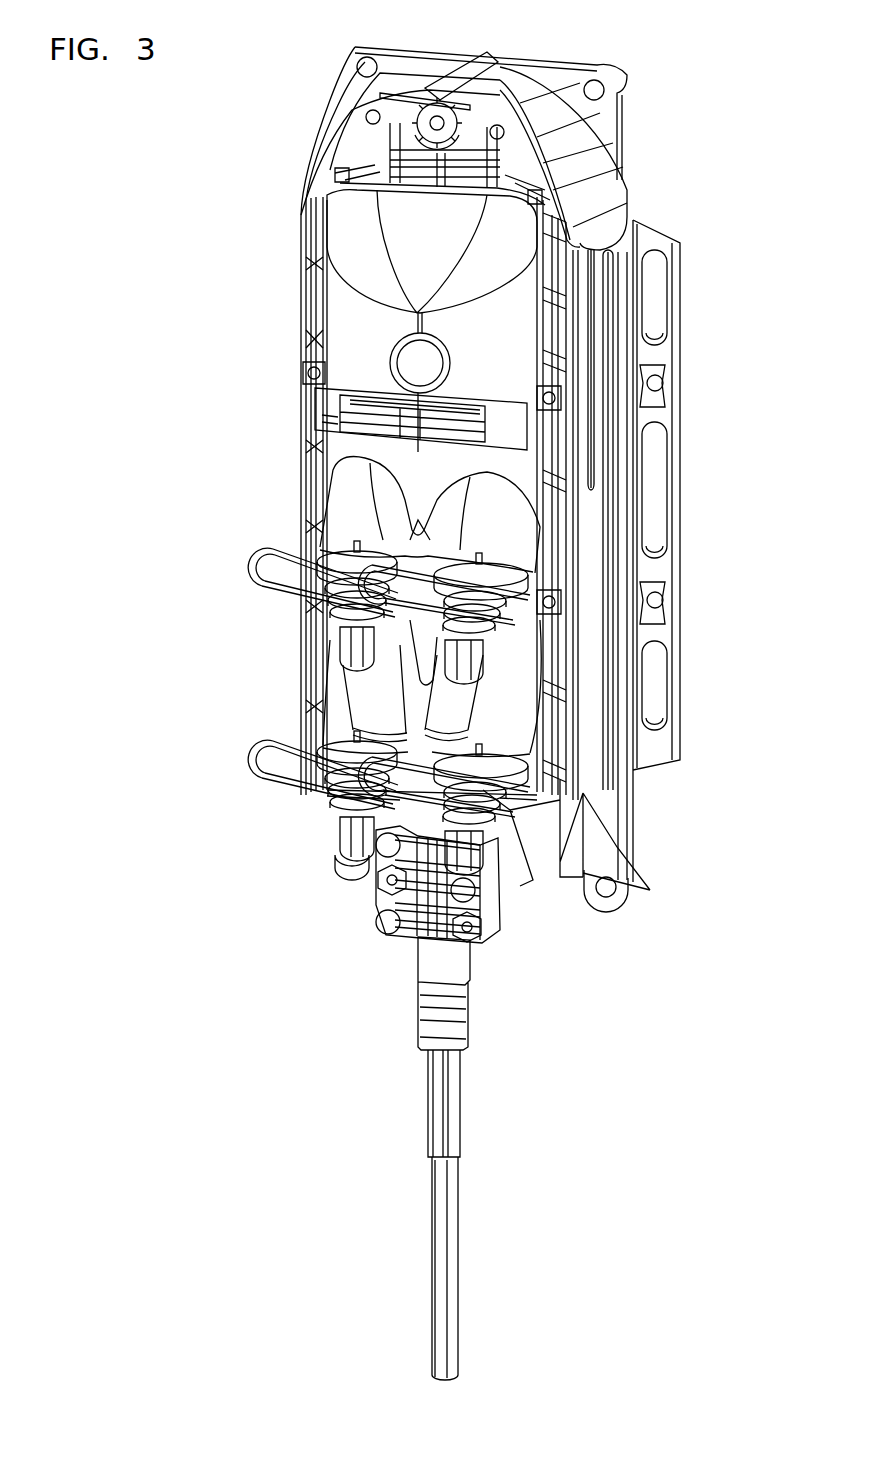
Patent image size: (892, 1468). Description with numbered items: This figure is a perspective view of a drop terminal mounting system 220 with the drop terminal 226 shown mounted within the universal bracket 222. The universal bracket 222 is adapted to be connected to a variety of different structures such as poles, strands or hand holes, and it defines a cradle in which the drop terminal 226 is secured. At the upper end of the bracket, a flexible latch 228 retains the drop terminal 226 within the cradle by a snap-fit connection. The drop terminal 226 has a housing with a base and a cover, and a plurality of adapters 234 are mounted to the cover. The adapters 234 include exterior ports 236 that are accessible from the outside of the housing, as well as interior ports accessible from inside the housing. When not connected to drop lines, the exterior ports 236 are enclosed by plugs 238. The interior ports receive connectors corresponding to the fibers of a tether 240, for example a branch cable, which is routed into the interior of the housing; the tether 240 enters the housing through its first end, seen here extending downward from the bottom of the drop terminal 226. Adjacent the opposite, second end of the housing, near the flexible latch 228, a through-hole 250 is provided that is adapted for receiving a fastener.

The drop terminal mounting system 220 is at (240, 185).
The universal bracket 222 is at (633, 205).
The drop terminal 226 is at (333, 316).
The flexible latch 228 is at (468, 82).
The adapters 234 is at (343, 598).
The exterior ports 236 is at (377, 617).
The plugs 238 is at (347, 657).
The tether 240 is at (453, 1197).
The through-hole 250 is at (435, 127).